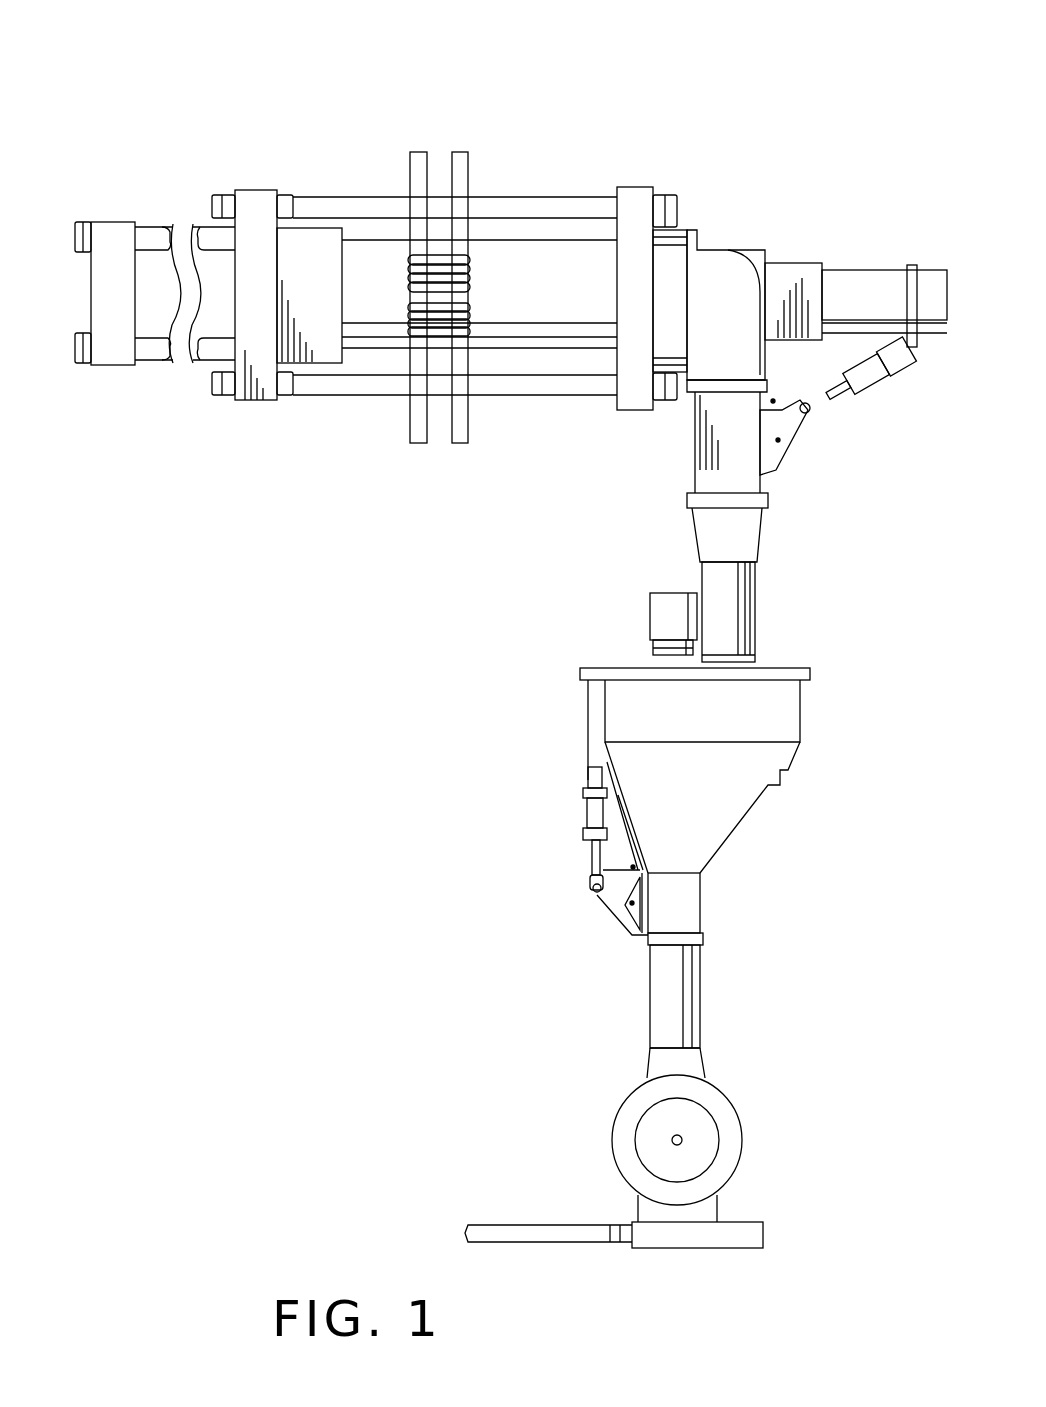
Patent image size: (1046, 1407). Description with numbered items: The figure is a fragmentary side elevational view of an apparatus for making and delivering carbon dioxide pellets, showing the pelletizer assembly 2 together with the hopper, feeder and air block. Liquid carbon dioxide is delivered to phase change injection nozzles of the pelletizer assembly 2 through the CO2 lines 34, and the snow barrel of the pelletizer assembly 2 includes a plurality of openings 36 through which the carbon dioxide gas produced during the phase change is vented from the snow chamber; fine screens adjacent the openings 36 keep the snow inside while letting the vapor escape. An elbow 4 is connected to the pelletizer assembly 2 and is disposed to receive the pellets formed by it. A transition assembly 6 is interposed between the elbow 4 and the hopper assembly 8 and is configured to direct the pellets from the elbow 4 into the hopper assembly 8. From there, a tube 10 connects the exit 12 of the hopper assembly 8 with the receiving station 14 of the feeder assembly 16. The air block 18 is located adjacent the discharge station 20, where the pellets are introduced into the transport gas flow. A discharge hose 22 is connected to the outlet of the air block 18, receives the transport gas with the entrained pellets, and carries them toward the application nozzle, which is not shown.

The pelletizer assembly 2 is at (470, 92).
The elbow 4 is at (763, 215).
The transition assembly 6 is at (640, 522).
The hopper assembly 8 is at (553, 708).
The tube 10 is at (662, 980).
The exit 12 is at (740, 915).
The receiving station 14 is at (632, 1048).
The feeder assembly 16 is at (645, 1137).
The air block 18 is at (757, 1236).
The discharge station 20 is at (727, 1208).
The discharge hose 22 is at (575, 1240).
The CO2 line 34 is at (460, 152).
The openings 36 is at (472, 307).